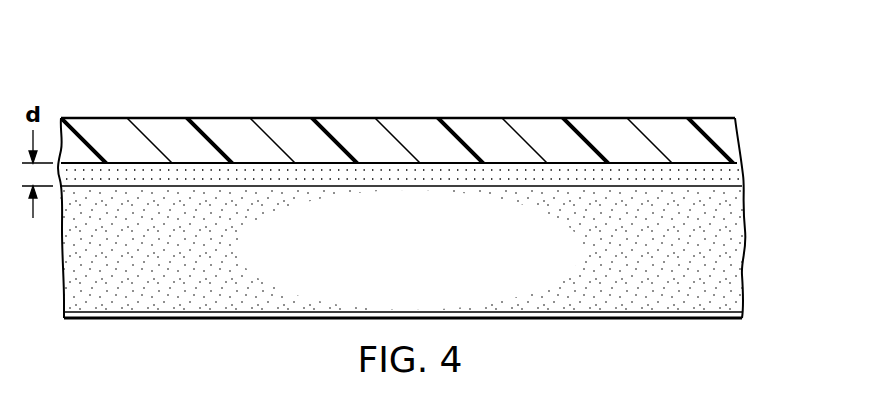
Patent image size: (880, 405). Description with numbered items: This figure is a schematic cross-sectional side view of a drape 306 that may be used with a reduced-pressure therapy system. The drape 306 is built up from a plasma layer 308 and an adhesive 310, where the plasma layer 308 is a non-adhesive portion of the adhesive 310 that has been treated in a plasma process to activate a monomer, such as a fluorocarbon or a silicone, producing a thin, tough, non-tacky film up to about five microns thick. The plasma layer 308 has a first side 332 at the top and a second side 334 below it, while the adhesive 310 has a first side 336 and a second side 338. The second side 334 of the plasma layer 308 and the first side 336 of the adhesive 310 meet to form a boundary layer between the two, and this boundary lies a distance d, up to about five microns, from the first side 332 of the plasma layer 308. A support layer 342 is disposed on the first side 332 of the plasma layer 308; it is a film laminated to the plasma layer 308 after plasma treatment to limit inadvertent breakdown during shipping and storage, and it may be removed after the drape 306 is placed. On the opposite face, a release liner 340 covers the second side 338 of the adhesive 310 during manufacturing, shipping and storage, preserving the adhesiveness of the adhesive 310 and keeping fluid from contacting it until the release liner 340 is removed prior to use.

The drape 306 is at (590, 94).
The plasma layer 308 is at (385, 173).
The adhesive 310 is at (425, 263).
The first side 332 is at (145, 162).
The second side 334 is at (731, 184).
The first side 336 is at (463, 185).
The second side 338 is at (95, 314).
The release liner 340 is at (676, 319).
The support layer 342 is at (717, 127).